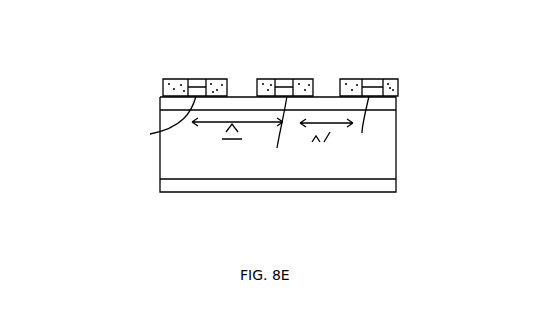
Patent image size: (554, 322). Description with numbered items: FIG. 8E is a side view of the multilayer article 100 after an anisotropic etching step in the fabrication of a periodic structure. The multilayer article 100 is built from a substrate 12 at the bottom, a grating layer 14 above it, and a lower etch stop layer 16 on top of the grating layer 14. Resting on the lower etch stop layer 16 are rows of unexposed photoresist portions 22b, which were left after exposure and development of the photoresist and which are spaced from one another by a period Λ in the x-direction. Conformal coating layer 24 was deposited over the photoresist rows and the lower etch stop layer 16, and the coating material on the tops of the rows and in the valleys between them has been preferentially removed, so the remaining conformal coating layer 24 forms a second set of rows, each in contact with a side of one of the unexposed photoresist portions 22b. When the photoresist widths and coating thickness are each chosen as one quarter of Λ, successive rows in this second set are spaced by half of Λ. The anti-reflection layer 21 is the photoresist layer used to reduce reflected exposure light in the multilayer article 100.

The multilayer article 100 is at (296, 118).
The substrate 12 is at (380, 190).
The grating layer 14 is at (388, 144).
The lower etch stop layer 16 is at (378, 106).
The anti-reflection layer 21 is at (244, 130).
The unexposed photoresist portions 22b is at (195, 79).
The conformal coating layer 24 is at (174, 79).